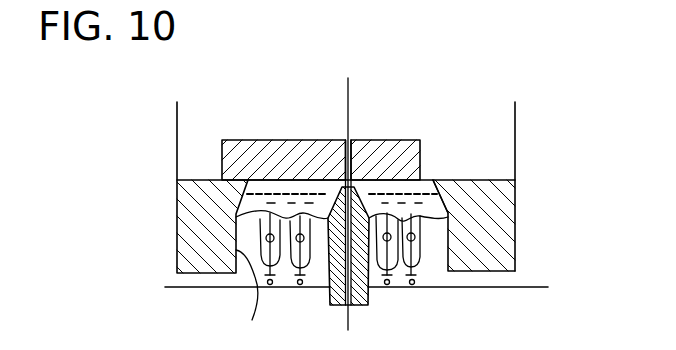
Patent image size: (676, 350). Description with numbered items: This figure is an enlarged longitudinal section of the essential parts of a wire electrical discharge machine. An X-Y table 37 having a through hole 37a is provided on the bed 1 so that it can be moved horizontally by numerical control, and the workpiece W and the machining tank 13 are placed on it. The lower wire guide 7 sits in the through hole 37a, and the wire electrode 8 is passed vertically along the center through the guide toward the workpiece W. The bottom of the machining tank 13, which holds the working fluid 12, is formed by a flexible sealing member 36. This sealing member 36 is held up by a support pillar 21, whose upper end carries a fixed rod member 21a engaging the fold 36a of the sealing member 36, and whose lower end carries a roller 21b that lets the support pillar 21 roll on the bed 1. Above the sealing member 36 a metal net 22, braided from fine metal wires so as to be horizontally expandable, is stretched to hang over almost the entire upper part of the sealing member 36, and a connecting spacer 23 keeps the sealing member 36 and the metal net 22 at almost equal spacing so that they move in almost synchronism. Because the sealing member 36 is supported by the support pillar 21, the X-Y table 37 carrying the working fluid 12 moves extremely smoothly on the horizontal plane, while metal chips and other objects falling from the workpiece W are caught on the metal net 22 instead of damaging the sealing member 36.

The bed 1 is at (533, 287).
The lower wire guide 7 is at (330, 288).
The wire electrode 8 is at (350, 107).
The working fluid 12 is at (427, 188).
The machining tank 13 is at (515, 104).
The support pillar 21 is at (415, 250).
The rod member 21a is at (411, 246).
The roller 21b is at (447, 238).
The metal net 22 is at (270, 180).
The connecting spacer 23 is at (268, 222).
The sealing member 36 is at (328, 280).
The fold 36a is at (266, 237).
The X-Y table 37 is at (503, 208).
The through hole 37a is at (236, 274).
The workpiece W is at (297, 140).